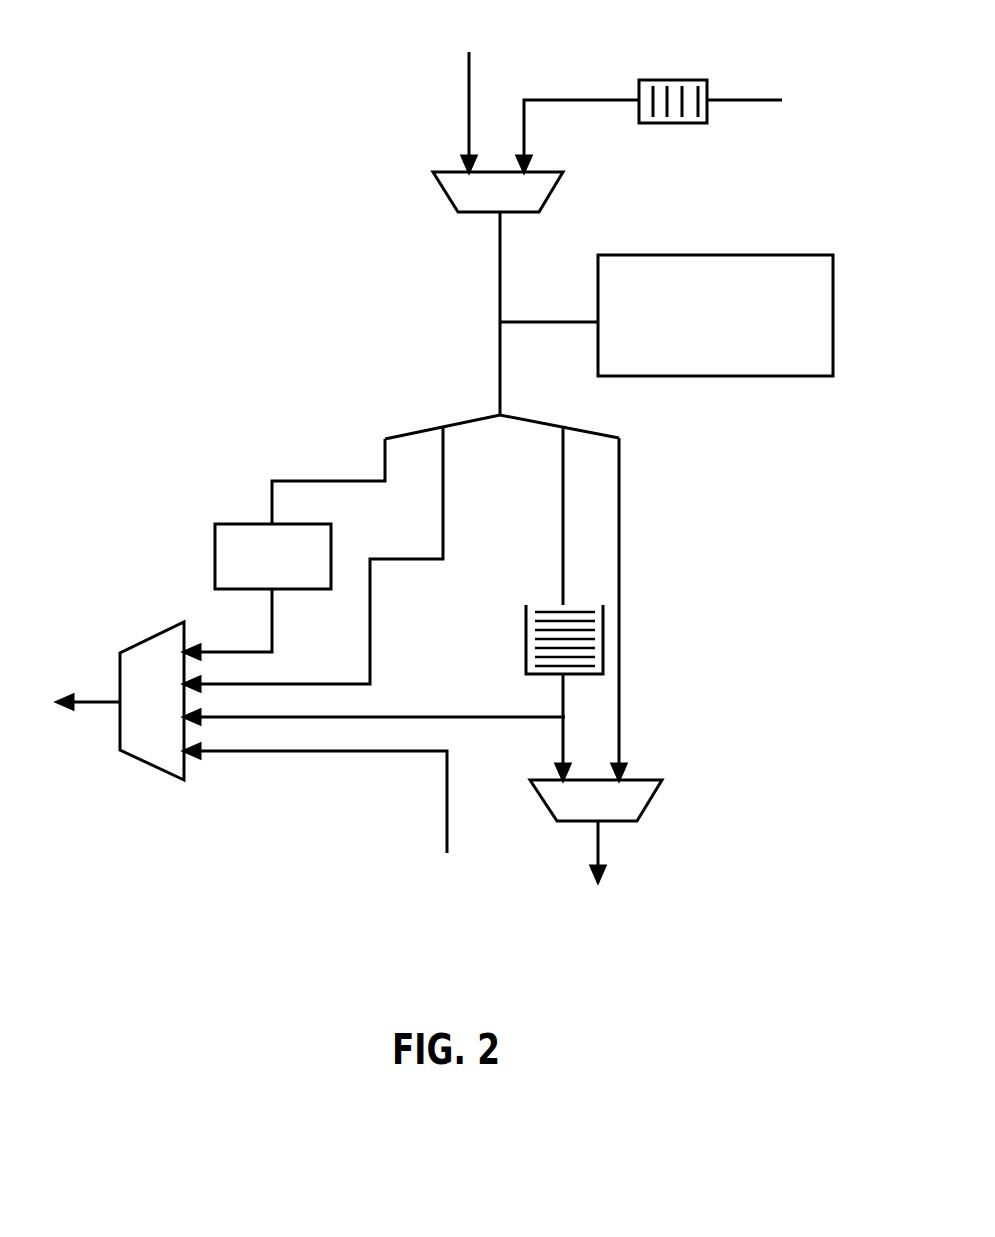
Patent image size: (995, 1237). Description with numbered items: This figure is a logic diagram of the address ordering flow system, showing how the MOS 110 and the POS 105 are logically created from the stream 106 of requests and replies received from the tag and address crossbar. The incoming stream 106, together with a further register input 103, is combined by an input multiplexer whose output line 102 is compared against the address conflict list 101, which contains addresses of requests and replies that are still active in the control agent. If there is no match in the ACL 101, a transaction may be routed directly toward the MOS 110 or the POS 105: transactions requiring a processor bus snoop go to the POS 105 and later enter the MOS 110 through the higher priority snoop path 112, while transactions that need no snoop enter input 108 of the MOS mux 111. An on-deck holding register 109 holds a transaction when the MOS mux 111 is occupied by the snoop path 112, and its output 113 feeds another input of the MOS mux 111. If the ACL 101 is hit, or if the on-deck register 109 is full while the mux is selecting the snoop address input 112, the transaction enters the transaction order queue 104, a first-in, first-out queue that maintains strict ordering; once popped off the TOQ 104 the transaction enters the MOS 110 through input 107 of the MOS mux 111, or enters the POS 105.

The address conflict list (ACL) 101 is at (682, 255).
The bus line from input multiplexer 102 is at (498, 298).
The register input 103 is at (771, 100).
The transaction order queue (TOQ) 104 is at (526, 622).
The POS 105 is at (600, 838).
The stream of requests and replies 106 is at (469, 52).
The MOS mux input 107 is at (372, 716).
The MOS input mux input 108 is at (352, 684).
The on-deck holding register 109 is at (215, 552).
The MOS 110 is at (91, 701).
The MOS mux 111 is at (158, 755).
The snoop path 112 is at (425, 753).
The On Deck output line 113 is at (248, 652).